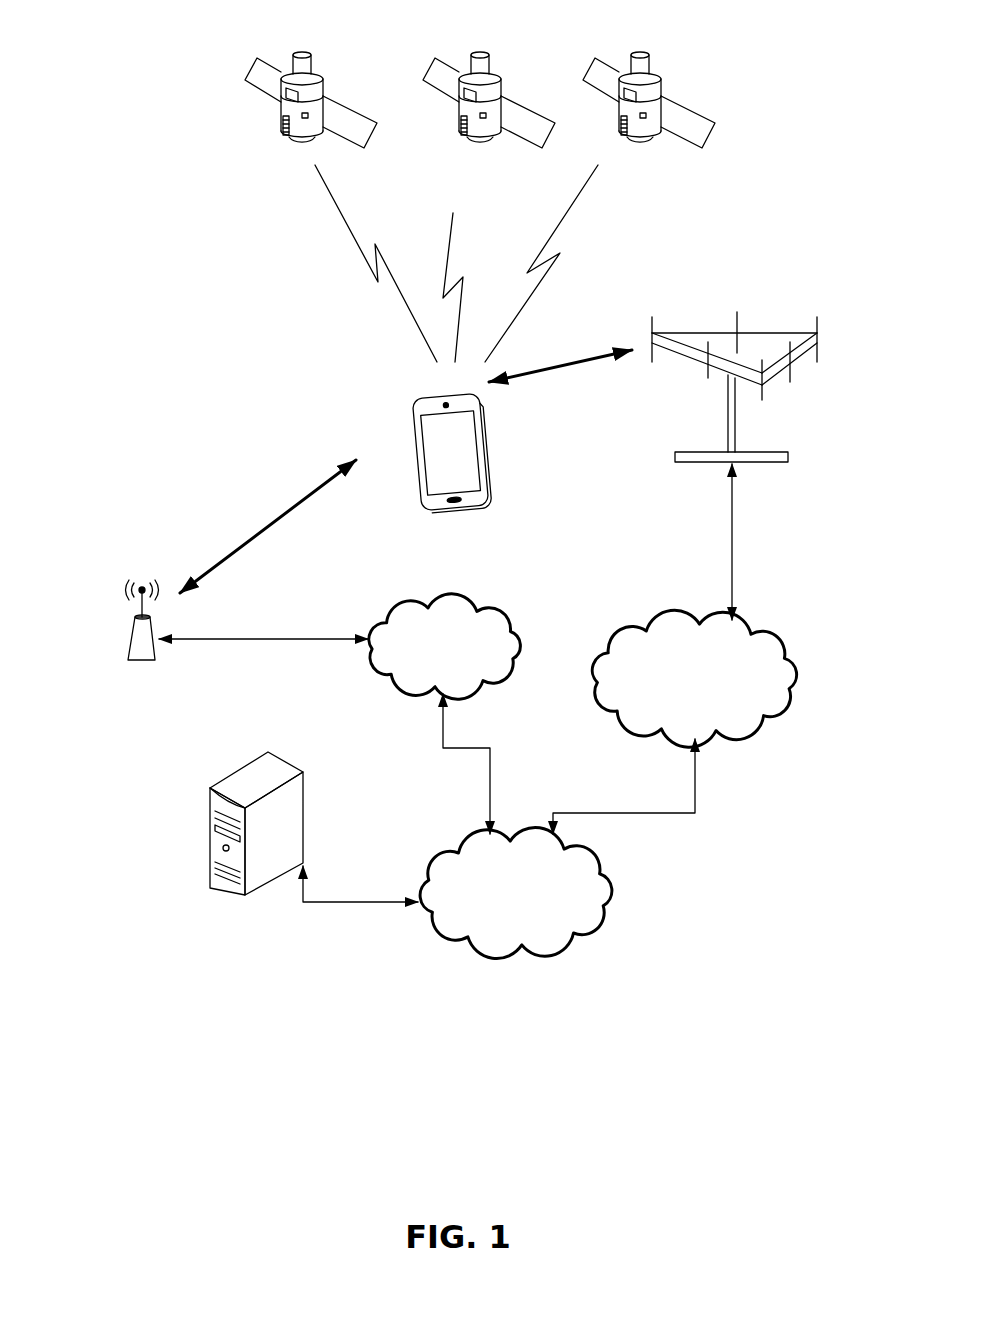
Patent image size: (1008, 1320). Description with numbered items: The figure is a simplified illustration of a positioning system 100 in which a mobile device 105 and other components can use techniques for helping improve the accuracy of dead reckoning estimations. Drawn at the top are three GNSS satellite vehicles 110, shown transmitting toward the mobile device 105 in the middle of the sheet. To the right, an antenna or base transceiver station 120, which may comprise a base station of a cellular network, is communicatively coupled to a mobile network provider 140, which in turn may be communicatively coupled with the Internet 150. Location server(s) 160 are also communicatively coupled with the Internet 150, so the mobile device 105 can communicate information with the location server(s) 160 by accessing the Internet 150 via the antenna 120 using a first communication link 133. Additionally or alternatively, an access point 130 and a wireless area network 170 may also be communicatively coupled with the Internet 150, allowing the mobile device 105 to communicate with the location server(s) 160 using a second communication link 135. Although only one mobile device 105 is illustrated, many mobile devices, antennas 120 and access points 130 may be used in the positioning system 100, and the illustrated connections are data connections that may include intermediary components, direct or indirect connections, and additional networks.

The positioning system 100 is at (157, 1081).
The mobile device 105 is at (420, 398).
The GNSS satellite vehicles 110 is at (230, 110).
The base transceiver station 120 is at (762, 462).
The access point 130 is at (148, 660).
The first communication link 133 is at (552, 373).
The second communication link 135 is at (270, 530).
The mobile network provider 140 is at (778, 642).
The Internet 150 is at (610, 900).
The location server 160 is at (281, 764).
The wireless area network 170 is at (503, 678).